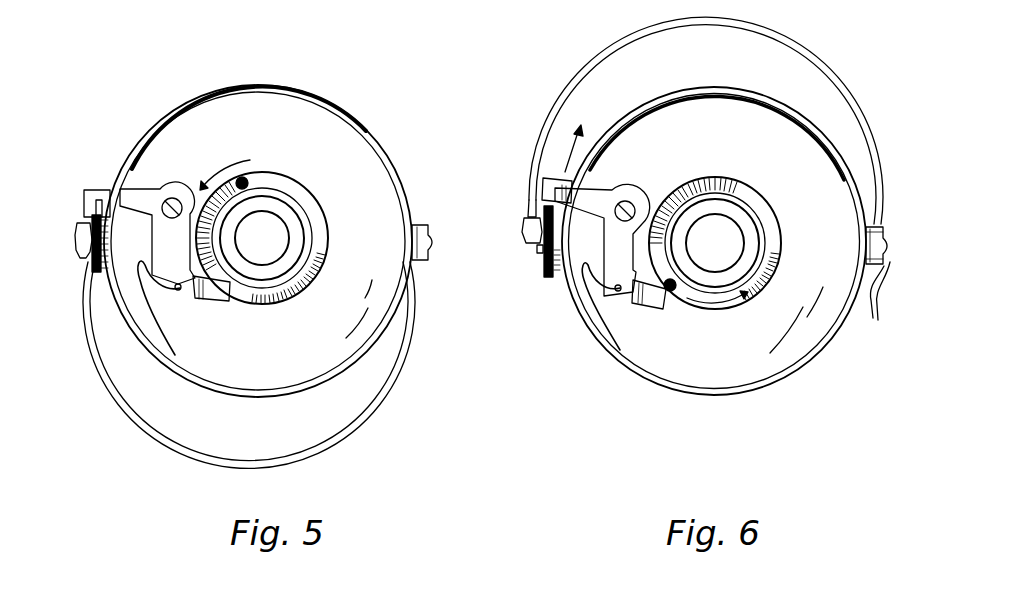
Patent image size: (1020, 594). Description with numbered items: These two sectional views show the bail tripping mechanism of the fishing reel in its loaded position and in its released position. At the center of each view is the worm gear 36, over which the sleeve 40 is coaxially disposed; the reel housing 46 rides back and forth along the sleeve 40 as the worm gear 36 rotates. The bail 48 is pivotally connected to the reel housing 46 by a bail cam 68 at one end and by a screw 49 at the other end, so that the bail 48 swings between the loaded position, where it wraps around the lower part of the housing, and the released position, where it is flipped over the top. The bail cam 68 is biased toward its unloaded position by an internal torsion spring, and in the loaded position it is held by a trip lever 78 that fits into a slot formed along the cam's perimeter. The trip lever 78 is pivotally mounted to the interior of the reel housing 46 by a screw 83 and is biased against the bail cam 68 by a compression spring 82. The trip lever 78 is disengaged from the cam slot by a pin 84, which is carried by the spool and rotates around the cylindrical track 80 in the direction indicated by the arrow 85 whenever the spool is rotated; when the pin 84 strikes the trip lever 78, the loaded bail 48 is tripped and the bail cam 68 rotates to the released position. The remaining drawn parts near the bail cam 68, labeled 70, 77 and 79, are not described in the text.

In FIG. 5, the worm gear 36 is at (276, 250).
In FIG. 5, the sleeve 40 is at (282, 218).
In FIG. 5, the reel housing 46 is at (246, 85).
In FIG. 6, the reel housing 46 is at (706, 87).
In FIG. 5, the bail 48 is at (414, 333).
In FIG. 6, the bail 48 is at (572, 72).
In FIG. 5, the screw 49 is at (432, 235).
In FIG. 6, the screw 49 is at (878, 272).
In FIG. 5, the bail cam 68 is at (92, 222).
In FIG. 6, the bail cam 68 is at (550, 282).
In FIG. 6, the hook 70 is at (537, 254).
In FIG. 5, the direction of movement 77 is at (97, 180).
In FIG. 6, the direction of movement 77 is at (552, 166).
In FIG. 5, the trip lever 78 is at (84, 195).
In FIG. 6, the trip lever 78 is at (543, 185).
In FIG. 5, the brake pad 79 is at (208, 307).
In FIG. 6, the brake pad 79 is at (655, 314).
In FIG. 5, the track 80 is at (326, 224).
In FIG. 6, the track 80 is at (744, 188).
In FIG. 5, the compression spring 82 is at (146, 312).
In FIG. 6, the compression spring 82 is at (606, 350).
In FIG. 5, the screw 83 is at (172, 198).
In FIG. 6, the screw 83 is at (630, 201).
In FIG. 5, the pin 84 is at (246, 181).
In FIG. 5, the arrow 85 is at (250, 160).
In FIG. 6, the arrow 85 is at (708, 303).